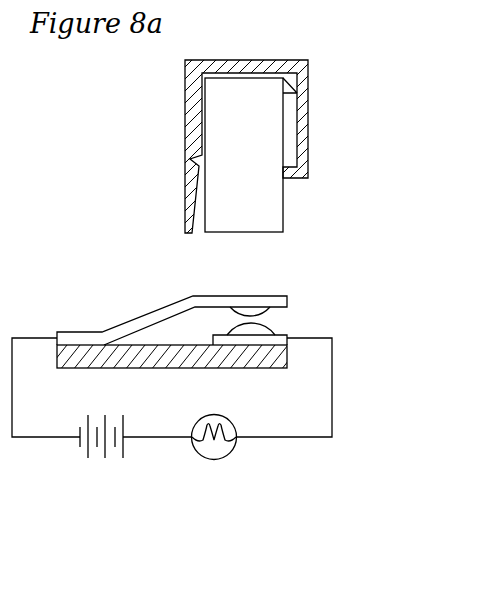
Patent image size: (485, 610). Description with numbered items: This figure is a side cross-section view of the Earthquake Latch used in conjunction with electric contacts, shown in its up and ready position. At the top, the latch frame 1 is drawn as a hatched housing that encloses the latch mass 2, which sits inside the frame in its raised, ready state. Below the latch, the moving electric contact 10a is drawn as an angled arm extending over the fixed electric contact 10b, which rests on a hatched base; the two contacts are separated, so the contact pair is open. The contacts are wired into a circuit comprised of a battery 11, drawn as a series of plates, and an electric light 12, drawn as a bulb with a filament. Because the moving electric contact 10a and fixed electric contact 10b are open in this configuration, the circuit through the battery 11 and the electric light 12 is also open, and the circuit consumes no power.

The latch frame 1 is at (318, 87).
The latch mass 2 is at (288, 205).
The moving electric contact 10a is at (167, 295).
The fixed electric contact 10b is at (293, 332).
The battery 11 is at (80, 468).
The electric light 12 is at (230, 468).